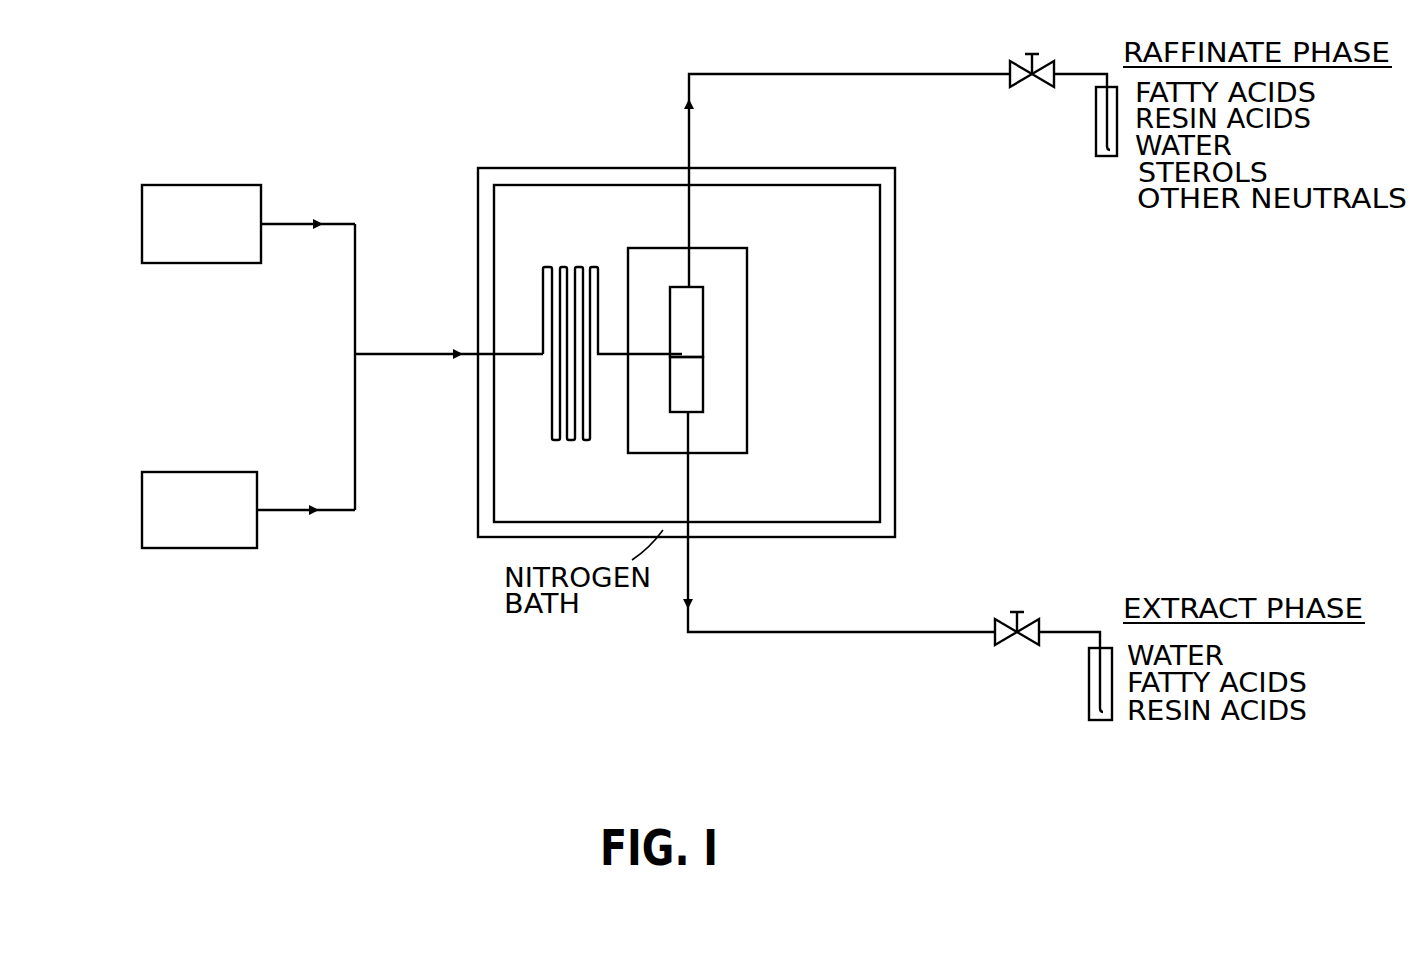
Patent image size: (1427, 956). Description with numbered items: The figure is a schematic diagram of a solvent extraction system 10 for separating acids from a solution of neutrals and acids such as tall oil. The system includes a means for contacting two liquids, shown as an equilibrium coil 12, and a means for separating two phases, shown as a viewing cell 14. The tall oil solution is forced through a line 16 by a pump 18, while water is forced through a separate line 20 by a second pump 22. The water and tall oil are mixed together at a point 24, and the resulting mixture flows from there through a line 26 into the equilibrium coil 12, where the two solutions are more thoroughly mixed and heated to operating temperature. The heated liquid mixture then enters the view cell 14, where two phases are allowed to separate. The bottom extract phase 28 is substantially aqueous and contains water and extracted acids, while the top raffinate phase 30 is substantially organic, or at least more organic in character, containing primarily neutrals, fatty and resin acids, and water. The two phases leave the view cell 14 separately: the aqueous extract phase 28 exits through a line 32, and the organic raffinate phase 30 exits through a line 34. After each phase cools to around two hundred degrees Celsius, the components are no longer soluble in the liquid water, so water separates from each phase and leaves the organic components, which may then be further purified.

The solvent extraction system 10 is at (452, 60).
The equilibrium coil 12 is at (586, 256).
The viewing cell 14 is at (760, 354).
The line 16 is at (356, 245).
The pump 18 is at (202, 185).
The line 20 is at (356, 440).
The pump 22 is at (226, 548).
The point 24 is at (356, 353).
The line 26 is at (410, 353).
The extract phase 28 is at (692, 390).
The raffinate phase 30 is at (692, 322).
The line 32 is at (690, 567).
The line 34 is at (778, 74).